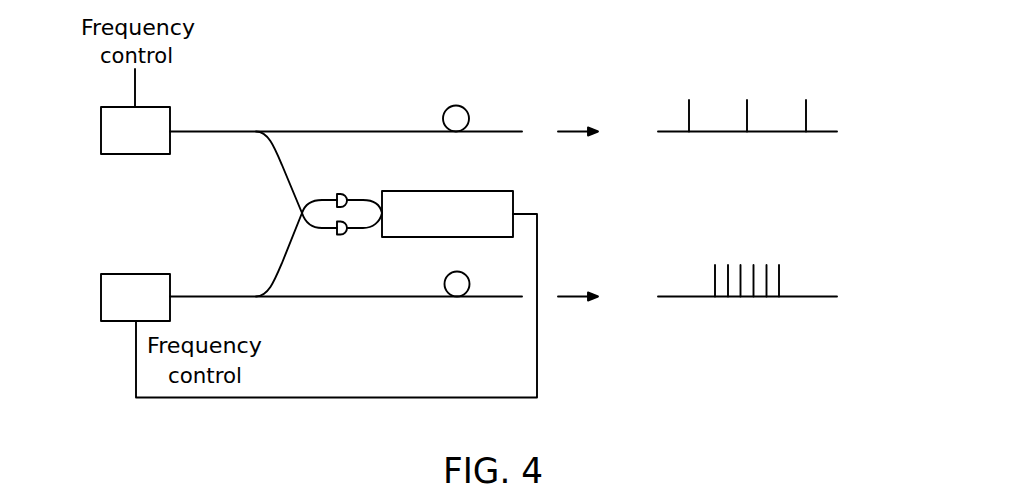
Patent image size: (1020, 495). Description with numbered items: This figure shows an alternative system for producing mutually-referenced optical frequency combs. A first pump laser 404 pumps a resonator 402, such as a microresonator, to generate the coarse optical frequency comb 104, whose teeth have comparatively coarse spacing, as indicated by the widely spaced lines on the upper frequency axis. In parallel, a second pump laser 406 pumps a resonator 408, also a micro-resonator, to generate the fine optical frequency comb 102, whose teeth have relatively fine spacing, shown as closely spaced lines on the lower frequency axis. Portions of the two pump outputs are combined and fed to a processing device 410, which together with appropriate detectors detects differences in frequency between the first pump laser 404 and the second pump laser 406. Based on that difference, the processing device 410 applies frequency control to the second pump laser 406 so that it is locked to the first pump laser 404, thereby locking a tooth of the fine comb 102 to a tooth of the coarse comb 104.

The fine optical frequency comb 102 is at (751, 315).
The coarse optical frequency comb 104 is at (747, 74).
The resonator 402 is at (456, 105).
The first pump laser 404 is at (170, 115).
The second pump laser 406 is at (136, 274).
The resonator 408 is at (444, 283).
The processing device 410 is at (513, 199).